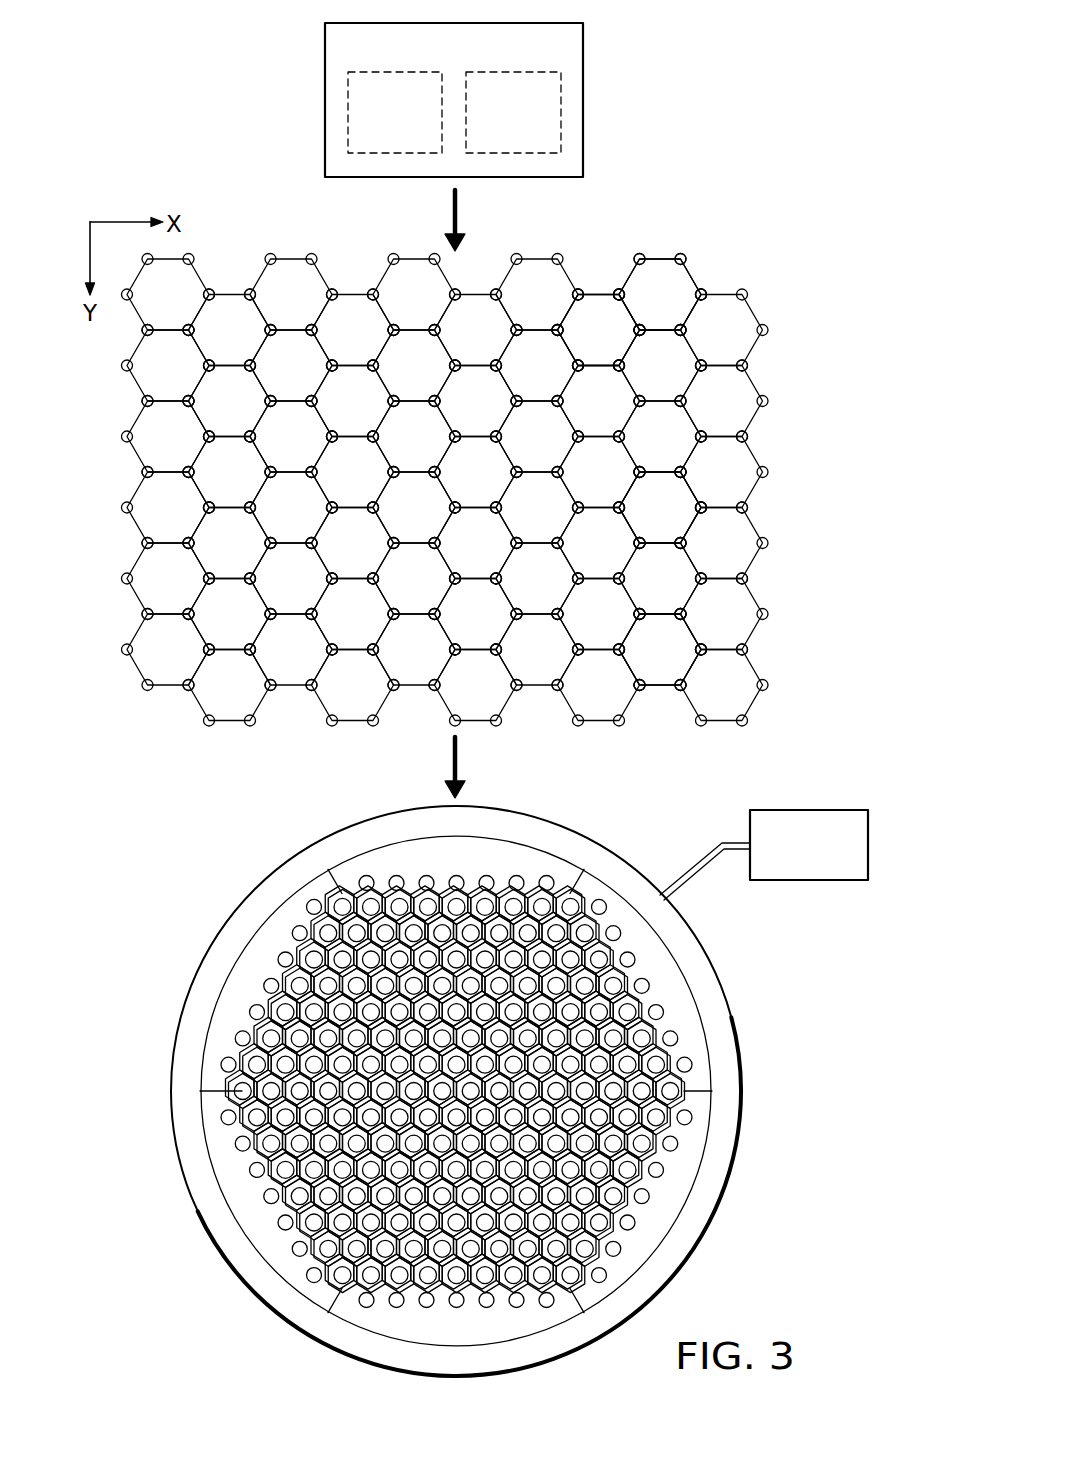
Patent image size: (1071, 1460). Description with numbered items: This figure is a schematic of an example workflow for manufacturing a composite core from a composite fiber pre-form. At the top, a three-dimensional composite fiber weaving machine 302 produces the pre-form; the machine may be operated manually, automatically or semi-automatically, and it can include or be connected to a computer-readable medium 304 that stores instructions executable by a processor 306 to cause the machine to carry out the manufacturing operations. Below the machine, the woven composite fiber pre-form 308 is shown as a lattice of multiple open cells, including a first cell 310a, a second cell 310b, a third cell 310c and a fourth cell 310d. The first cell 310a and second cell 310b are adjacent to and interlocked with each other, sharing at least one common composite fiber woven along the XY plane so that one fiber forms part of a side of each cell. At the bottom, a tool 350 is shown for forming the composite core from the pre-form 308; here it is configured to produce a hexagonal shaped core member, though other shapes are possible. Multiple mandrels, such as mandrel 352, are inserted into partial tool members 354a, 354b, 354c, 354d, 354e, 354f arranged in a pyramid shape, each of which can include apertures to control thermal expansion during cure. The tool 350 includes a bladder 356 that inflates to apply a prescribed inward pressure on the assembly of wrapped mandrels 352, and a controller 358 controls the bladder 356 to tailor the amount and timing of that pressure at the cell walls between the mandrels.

The composite fiber weaving machine 302 is at (318, 99).
The computer-readable medium 304 is at (372, 128).
The processor 306 is at (490, 128).
The composite fiber pre-form 308 is at (103, 461).
The first cell 310a is at (598, 308).
The second cell 310b is at (660, 271).
The third cell 310c is at (680, 516).
The fourth cell 310d is at (680, 658).
The tool 350 is at (256, 850).
The mandrel 352 is at (243, 1095).
The partial tool member 354a is at (535, 865).
The partial tool member 354b is at (665, 977).
The partial tool member 354c is at (665, 1207).
The partial tool member 354d is at (377, 1322).
The partial tool member 354e is at (243, 1205).
The partial tool member 354f is at (245, 976).
The bladder 356 is at (740, 1111).
The controller 358 is at (785, 860).